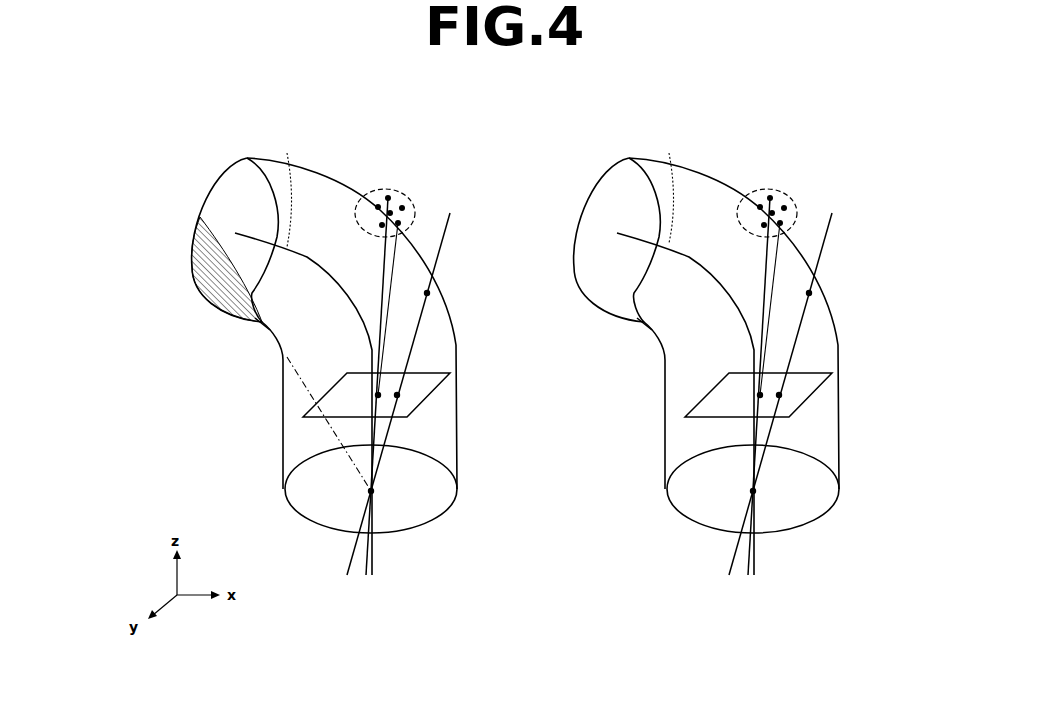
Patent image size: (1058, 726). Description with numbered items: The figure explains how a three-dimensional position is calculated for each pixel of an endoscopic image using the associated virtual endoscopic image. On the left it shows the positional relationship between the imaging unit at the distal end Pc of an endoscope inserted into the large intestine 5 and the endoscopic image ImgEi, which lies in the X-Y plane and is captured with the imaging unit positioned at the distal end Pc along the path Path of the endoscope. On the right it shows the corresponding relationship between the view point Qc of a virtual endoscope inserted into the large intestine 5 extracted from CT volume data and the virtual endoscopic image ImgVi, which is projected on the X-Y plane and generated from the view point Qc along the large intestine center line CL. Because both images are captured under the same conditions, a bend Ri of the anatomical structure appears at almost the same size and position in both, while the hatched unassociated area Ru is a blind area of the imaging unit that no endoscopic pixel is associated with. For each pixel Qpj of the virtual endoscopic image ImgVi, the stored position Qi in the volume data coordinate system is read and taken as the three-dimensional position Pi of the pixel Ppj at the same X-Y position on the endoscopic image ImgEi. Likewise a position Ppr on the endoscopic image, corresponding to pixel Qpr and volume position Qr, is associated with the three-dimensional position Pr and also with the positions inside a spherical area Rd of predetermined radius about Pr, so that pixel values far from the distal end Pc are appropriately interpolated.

The large intestine 5 is at (283, 468).
The unassociated area Ru is at (216, 275).
The bend Ri is at (245, 325).
The path of the endoscope Path is at (316, 311).
The large intestine center line CL is at (661, 187).
The spherical area Rd is at (357, 192).
The three-dimensional position Pr is at (376, 205).
The three-dimensional position Pi is at (430, 293).
The distal end of the endoscope Pc is at (373, 493).
The endoscopic image ImgEi is at (302, 416).
The position on the endoscopic image Ppr is at (378, 395).
The position on the endoscopic image Ppj is at (397, 395).
The position in volume data coordinate system Qr is at (758, 205).
The position in volume data coordinate system Qi is at (812, 293).
The view point of the virtual endoscope Qc is at (755, 493).
The virtual endoscopic image ImgVi is at (684, 416).
The pixel position on the virtual endoscopic image Qpr is at (760, 395).
The pixel position on the virtual endoscopic image Qpj is at (779, 395).